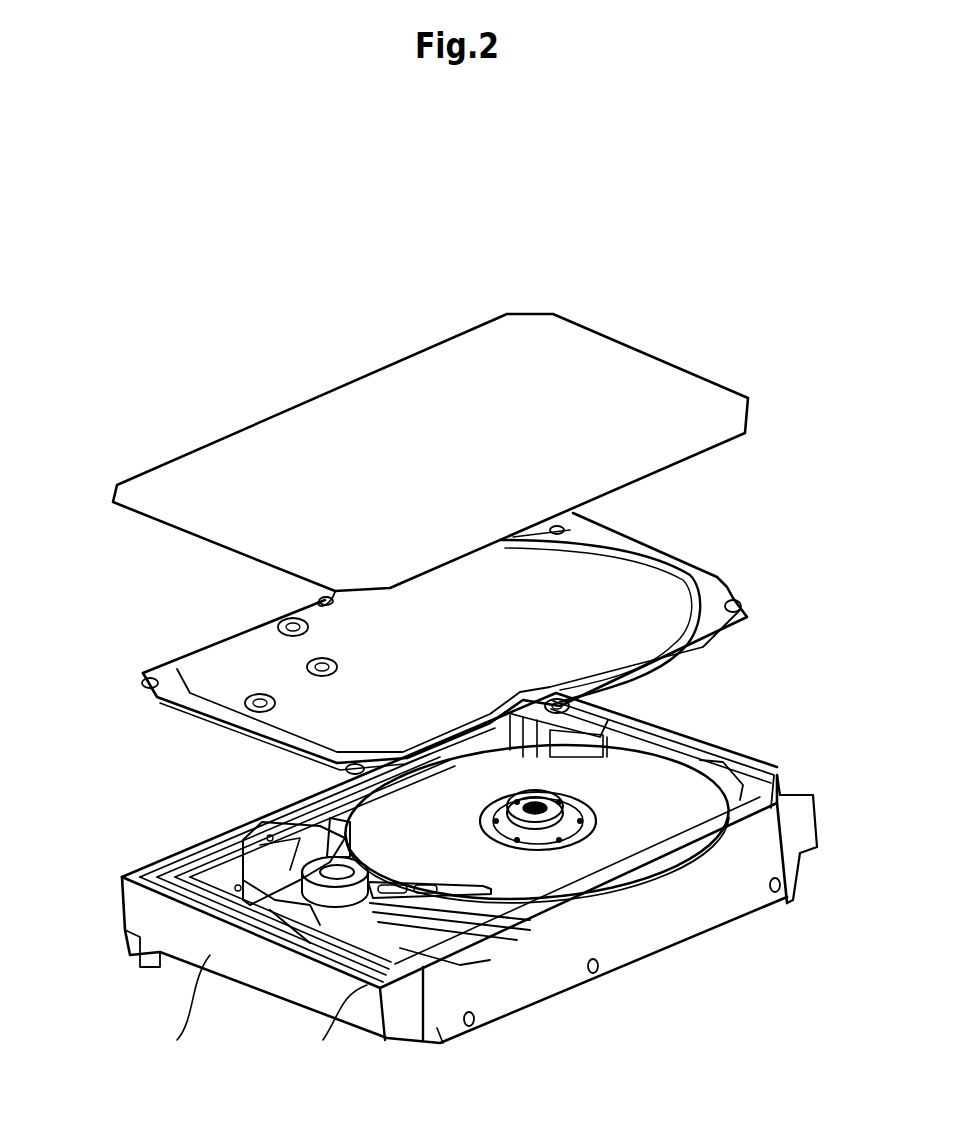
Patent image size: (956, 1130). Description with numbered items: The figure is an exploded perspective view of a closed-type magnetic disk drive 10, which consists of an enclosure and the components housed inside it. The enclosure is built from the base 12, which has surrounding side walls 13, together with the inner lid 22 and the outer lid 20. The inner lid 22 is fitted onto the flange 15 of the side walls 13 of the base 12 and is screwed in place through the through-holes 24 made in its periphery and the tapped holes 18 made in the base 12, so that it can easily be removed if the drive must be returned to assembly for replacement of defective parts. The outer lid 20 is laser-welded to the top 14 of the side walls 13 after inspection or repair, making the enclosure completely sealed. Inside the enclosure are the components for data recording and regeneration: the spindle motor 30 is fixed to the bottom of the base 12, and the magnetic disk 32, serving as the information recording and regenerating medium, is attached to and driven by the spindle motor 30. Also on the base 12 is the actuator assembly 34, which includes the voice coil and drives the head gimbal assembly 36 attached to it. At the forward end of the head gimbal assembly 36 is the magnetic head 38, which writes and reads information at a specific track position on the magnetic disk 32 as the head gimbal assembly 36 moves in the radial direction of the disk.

The magnetic disk drive 10 is at (218, 377).
The base 12 is at (687, 945).
The side walls 13 is at (710, 907).
The top (lid) of the side walls 14 is at (755, 777).
The flange 15 is at (723, 762).
The tapped holes 18 is at (790, 787).
The outer lid 20 is at (548, 357).
The inner lid 22 is at (615, 570).
The through-holes 24 is at (313, 598).
The spindle motor 30 is at (580, 805).
The magnetic disk 32 is at (660, 823).
The actuator assembly 34 is at (243, 860).
The head gimbal assembly 36 is at (440, 880).
The magnetic head 38 is at (500, 900).